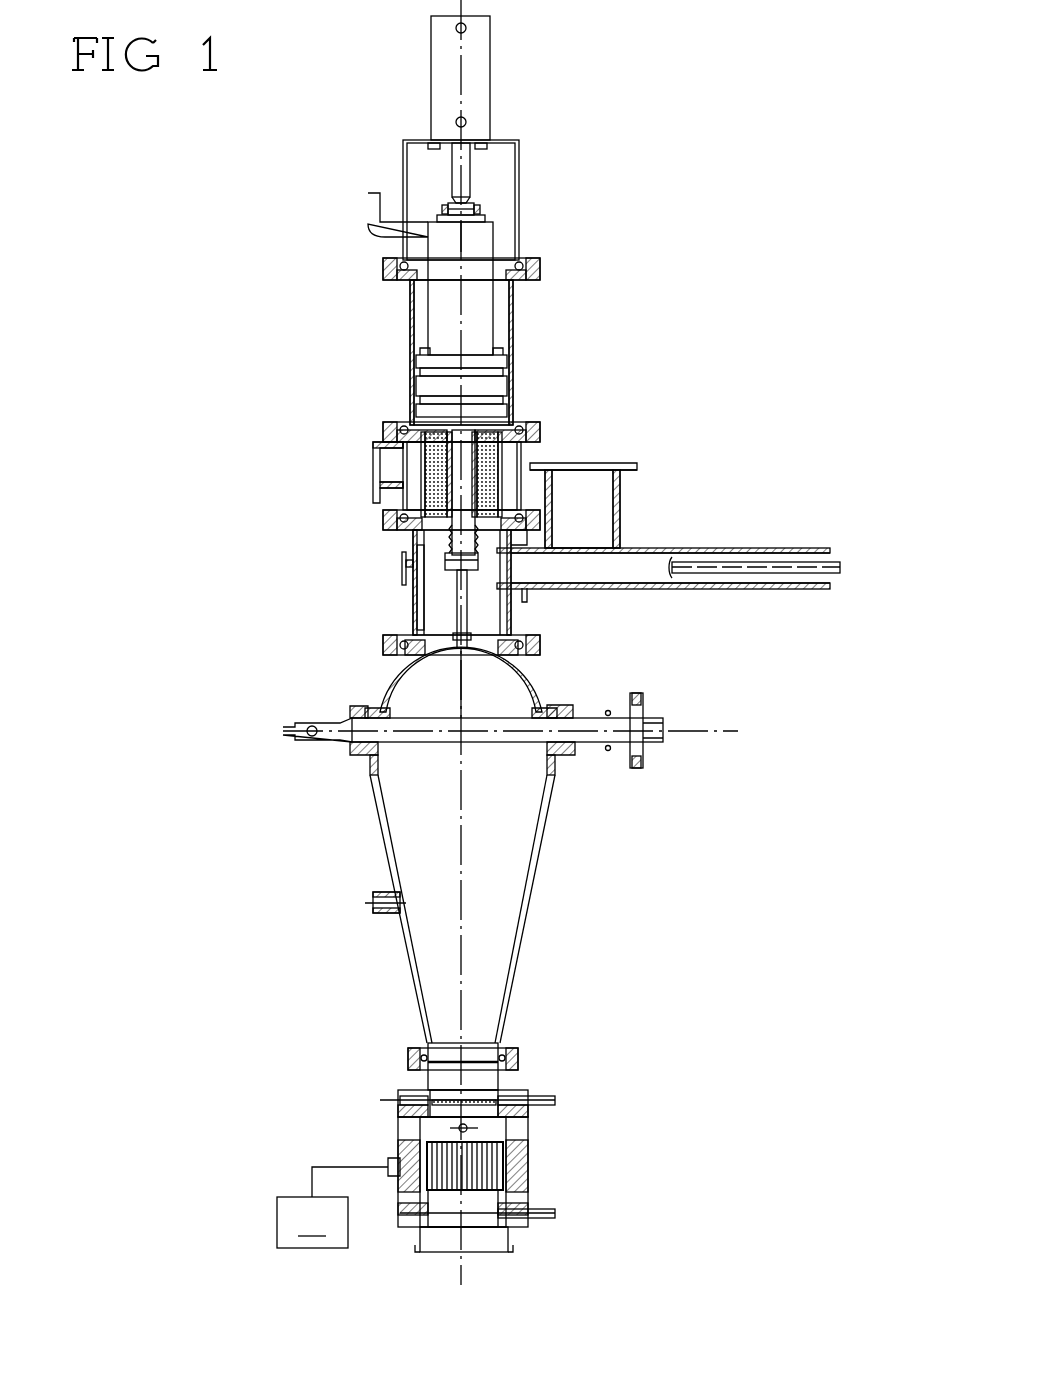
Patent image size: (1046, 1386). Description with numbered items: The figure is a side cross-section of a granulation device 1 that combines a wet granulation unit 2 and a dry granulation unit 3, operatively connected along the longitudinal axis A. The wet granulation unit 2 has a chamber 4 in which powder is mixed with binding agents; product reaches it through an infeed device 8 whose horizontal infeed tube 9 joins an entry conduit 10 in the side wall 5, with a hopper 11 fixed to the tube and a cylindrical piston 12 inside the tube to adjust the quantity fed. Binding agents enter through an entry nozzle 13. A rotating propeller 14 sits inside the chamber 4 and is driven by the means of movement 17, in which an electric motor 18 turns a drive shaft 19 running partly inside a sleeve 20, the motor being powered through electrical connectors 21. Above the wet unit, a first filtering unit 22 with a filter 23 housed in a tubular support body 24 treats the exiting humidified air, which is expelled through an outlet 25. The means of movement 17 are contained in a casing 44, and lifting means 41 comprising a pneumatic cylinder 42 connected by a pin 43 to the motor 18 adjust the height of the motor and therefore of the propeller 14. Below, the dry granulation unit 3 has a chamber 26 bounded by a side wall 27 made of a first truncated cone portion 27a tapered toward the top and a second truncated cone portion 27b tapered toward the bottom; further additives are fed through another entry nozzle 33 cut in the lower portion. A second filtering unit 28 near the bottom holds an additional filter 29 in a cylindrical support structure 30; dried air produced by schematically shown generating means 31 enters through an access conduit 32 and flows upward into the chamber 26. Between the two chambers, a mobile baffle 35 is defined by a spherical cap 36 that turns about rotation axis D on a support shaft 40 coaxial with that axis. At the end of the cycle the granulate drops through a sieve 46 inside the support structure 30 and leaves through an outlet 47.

The device 1 is at (661, 90).
The wet granulation unit 2 is at (395, 537).
The dry granulation unit 3 is at (355, 832).
The chamber 4 is at (522, 647).
The side wall 5 is at (443, 638).
The infeed device 8 is at (667, 525).
The infeed tube 9 is at (655, 588).
The entry conduit 10 is at (527, 600).
The hopper 11 is at (617, 493).
The cylindrical piston 12 is at (607, 565).
The entry nozzle 13 is at (400, 578).
The rotating propeller 14 is at (385, 645).
The means of movement 17 is at (420, 322).
The electric motor 18 is at (480, 243).
The drive shaft 19 is at (408, 618).
The sleeve 20 is at (465, 490).
The electrical connectors 21 is at (368, 205).
The first filtering unit 22 is at (503, 448).
The filter 23 is at (400, 428).
The tubular support body 24 is at (378, 430).
The outlet 25 is at (375, 476).
The chamber 26 is at (525, 845).
The side wall 27 is at (530, 912).
The first truncated cone portion 27a is at (545, 712).
The second truncated cone portion 27b is at (537, 840).
The second filtering unit 28 is at (528, 1132).
The additional filter 29 is at (498, 1170).
The support structure 30 is at (528, 1143).
The generating means 31 is at (332, 1207).
The access conduit 32 is at (392, 1165).
The entry nozzle 33 is at (388, 914).
The mobile baffle 35 is at (425, 655).
The spherical cap 36 is at (380, 712).
The support shaft 40 is at (612, 733).
The lifting means 41 is at (513, 103).
The pneumatic cylinder 42 is at (457, 145).
The pin 43 is at (470, 205).
The casing 44 is at (519, 212).
The sieve 46 is at (478, 1093).
The outlet 47 is at (503, 1238).
The longitudinal axis A is at (461, 1272).
The rotation axis D is at (700, 731).